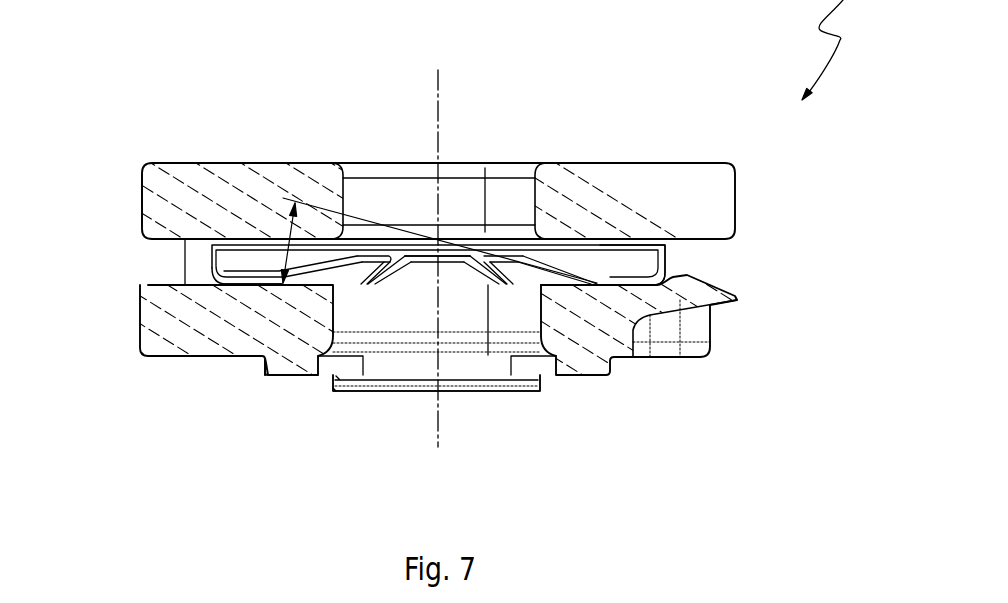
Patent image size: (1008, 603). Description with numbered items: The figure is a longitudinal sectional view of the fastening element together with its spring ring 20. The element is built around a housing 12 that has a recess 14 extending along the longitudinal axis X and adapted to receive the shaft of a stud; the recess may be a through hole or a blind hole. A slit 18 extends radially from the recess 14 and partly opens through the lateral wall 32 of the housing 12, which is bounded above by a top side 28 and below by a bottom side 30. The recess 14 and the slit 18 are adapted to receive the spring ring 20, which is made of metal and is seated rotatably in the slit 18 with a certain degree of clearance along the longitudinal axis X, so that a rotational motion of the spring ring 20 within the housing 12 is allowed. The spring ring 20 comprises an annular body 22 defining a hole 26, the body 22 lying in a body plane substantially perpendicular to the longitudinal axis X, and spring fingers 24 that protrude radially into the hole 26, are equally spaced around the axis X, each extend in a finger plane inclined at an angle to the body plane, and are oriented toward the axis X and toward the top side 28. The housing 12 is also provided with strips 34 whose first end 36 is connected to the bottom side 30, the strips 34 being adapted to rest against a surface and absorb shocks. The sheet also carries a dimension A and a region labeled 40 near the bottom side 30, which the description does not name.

The housing 12 is at (738, 198).
The recess 14 is at (505, 197).
The slit 18 is at (703, 263).
The spring ring 20 is at (210, 262).
The body 22 is at (240, 284).
The spring fingers 24 is at (344, 268).
The hole 26 is at (420, 270).
The top side 28 is at (202, 163).
The bottom side 30 is at (177, 357).
The lateral wall 32 is at (140, 197).
The strips 34 is at (498, 392).
The first end 36 is at (498, 392).
The step 40 is at (285, 370).
The spring travel A is at (295, 230).
The longitudinal axis X is at (438, 118).